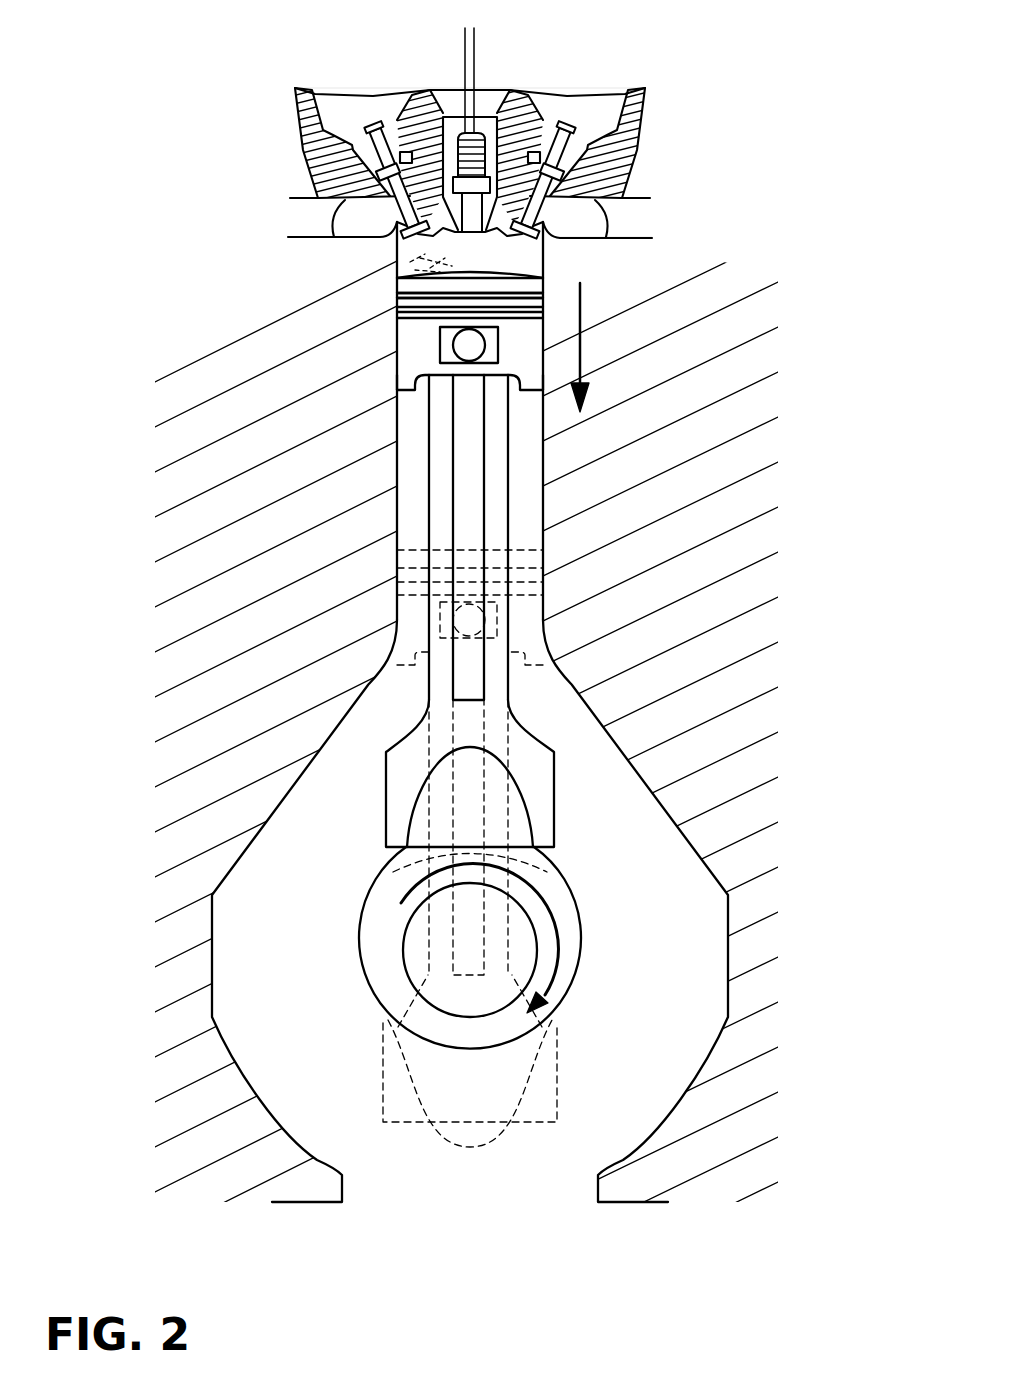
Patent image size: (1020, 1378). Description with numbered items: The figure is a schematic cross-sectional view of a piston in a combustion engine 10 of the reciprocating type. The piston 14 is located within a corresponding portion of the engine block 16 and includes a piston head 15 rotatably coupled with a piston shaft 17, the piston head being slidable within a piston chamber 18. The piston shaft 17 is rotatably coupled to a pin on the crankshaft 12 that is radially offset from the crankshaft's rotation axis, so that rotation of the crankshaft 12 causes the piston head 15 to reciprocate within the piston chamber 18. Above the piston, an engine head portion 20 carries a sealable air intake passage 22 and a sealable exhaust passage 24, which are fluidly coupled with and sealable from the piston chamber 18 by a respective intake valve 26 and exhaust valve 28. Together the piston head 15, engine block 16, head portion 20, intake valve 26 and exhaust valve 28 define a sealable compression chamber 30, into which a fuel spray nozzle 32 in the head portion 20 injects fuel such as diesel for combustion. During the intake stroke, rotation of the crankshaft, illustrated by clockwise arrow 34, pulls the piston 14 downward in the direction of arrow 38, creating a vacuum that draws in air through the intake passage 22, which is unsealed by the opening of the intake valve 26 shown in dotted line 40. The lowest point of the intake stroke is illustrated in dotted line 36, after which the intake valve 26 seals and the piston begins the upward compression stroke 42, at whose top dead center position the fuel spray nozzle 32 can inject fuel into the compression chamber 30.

The combustion engine 10 is at (176, 26).
The crankshaft 12 is at (477, 1000).
The piston 14 is at (514, 423).
The piston head 15 is at (518, 336).
The engine block 16 is at (660, 378).
The piston shaft 17 is at (499, 457).
The piston chamber 18 is at (416, 418).
The engine head portion 20 is at (513, 110).
The sealable air intake passage 22 is at (337, 209).
The sealable exhaust passage 24 is at (603, 209).
The intake valve 26 is at (371, 211).
The exhaust valve 28 is at (569, 211).
The compression chamber 30 is at (472, 251).
The fuel spray nozzle 32 is at (432, 133).
The clockwise arrow 34 is at (558, 945).
The dotted line 36 is at (557, 840).
The arrow 38 is at (588, 345).
The dotted line 40 is at (400, 254).
The compression stroke 42 is at (415, 345).